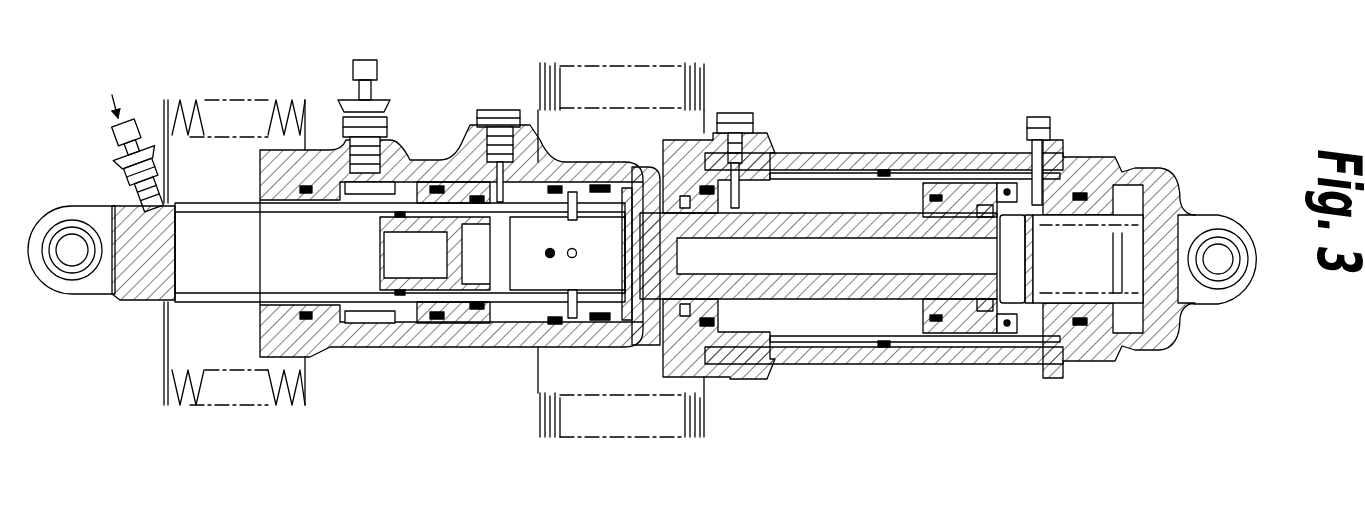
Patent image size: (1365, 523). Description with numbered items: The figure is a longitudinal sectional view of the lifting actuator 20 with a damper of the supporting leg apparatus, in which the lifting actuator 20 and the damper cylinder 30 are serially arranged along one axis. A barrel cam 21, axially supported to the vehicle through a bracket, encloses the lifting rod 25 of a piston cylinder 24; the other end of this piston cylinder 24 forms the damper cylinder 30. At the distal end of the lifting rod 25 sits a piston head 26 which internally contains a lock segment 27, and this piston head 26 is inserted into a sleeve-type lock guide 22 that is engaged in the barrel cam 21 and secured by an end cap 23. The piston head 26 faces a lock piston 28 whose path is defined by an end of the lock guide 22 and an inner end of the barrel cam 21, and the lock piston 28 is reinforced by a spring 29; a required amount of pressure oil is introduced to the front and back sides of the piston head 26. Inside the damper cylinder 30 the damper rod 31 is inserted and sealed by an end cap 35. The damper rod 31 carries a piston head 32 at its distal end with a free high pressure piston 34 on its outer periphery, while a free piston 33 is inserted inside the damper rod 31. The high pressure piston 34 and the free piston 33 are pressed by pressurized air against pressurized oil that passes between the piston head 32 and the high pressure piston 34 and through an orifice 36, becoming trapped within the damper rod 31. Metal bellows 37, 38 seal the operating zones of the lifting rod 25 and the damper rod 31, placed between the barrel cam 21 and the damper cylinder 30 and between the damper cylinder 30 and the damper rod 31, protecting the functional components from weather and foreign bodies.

The lifting actuator 20 is at (818, 130).
The barrel cam 21 is at (1110, 165).
The lock guide 22 is at (983, 362).
The end cap 23 is at (665, 379).
The piston cylinder 24 is at (618, 158).
The lifting rod 25 is at (835, 299).
The piston head 26 is at (937, 183).
The lock segment 27 is at (1003, 183).
The lock piston 28 is at (1125, 333).
The spring 29 is at (1148, 318).
The damper cylinder 30 is at (468, 347).
The damper rod 31 is at (125, 290).
The piston head 32 is at (552, 182).
The free piston 33 is at (388, 300).
The free high pressure piston 34 is at (412, 187).
The end cap 35 is at (258, 330).
The orifice 36 is at (547, 313).
The metal bellows 37 is at (560, 420).
The metal bellows 38 is at (185, 390).